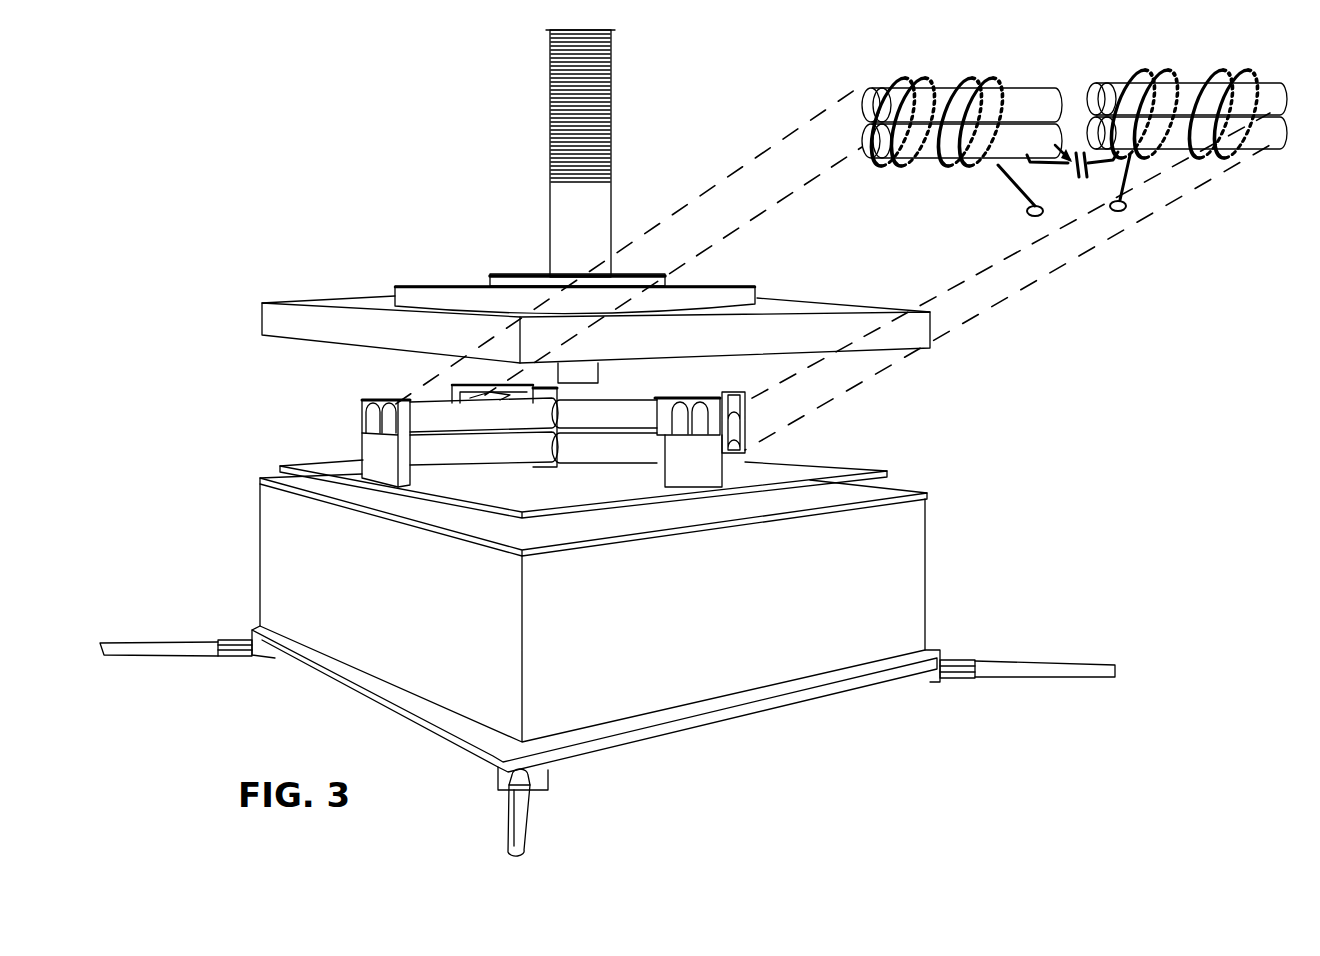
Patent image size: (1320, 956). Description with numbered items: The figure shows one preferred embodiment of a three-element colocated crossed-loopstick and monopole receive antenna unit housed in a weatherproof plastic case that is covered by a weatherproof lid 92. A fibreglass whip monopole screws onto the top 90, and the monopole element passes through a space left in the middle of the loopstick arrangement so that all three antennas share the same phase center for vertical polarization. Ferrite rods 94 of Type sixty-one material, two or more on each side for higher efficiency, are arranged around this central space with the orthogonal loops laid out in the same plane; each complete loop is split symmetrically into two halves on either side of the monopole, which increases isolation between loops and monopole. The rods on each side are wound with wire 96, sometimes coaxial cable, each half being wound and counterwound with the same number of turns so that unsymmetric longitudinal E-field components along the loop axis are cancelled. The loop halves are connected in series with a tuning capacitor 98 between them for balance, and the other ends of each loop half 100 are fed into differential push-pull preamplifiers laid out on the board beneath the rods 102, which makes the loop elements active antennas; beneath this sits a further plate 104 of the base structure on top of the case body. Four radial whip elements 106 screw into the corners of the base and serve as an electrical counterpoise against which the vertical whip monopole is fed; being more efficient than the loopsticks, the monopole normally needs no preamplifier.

The top 90 is at (605, 105).
The weatherproof lid 92 is at (275, 303).
The ferrite rods 94 is at (476, 425).
The wire 96 is at (1143, 78).
The tuning capacitor 98 is at (1103, 170).
The other ends of each loop half 100 is at (1043, 215).
The board beneath the rods 102 is at (835, 470).
The base plate 104 is at (560, 490).
The radial whip elements 106 is at (528, 815).